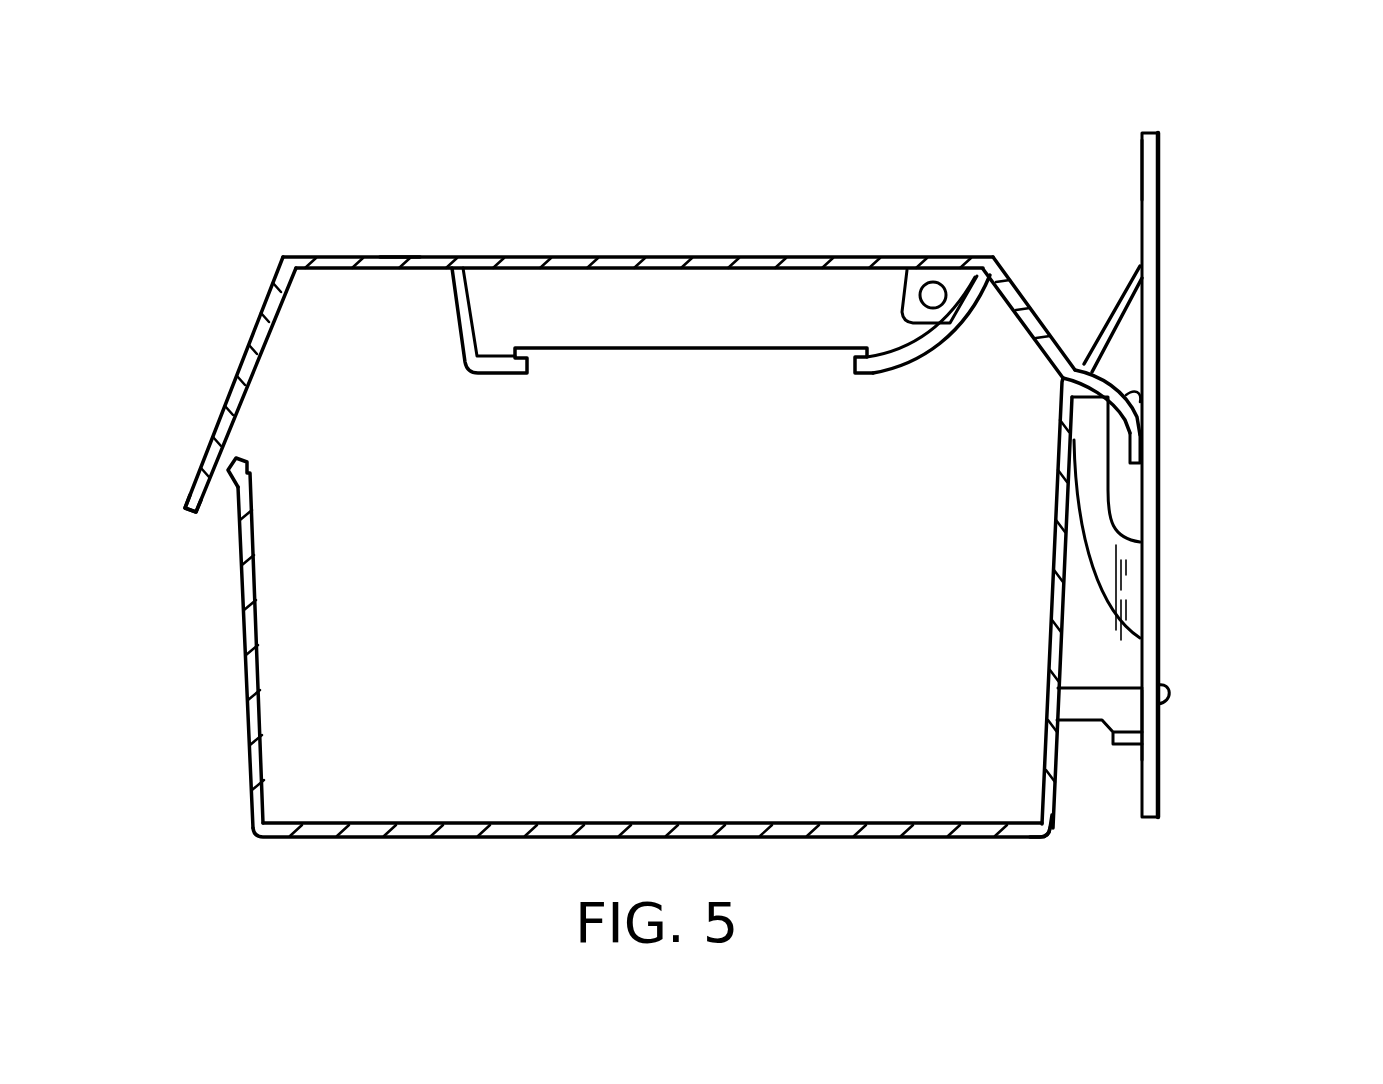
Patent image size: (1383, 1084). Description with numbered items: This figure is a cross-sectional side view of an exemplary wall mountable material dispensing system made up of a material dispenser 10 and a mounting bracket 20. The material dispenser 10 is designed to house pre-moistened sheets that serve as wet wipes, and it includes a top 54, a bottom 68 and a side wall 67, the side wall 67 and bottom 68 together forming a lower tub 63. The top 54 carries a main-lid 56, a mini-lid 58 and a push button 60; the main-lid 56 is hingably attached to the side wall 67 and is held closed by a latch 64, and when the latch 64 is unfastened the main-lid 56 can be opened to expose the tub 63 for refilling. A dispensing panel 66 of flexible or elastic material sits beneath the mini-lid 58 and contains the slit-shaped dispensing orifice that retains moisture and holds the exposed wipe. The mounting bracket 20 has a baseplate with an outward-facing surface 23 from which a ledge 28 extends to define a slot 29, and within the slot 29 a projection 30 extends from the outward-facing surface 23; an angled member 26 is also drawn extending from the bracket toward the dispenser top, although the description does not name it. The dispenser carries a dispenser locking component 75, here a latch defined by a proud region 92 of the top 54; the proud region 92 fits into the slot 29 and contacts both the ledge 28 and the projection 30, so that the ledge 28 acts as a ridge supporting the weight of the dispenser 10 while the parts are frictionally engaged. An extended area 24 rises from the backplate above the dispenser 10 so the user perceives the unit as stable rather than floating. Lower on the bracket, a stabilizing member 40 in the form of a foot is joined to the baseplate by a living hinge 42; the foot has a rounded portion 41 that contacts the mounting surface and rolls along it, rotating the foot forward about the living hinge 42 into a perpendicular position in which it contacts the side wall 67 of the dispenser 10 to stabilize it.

The material dispenser 10 is at (258, 212).
The mounting bracket 20 is at (1268, 255).
The outward-facing surface 23 is at (1142, 165).
The extended area 24 is at (1150, 153).
The mounting bracket 26 is at (1102, 318).
The ledge 28 is at (1075, 492).
The slot 29 is at (1130, 498).
The projection 30 is at (1140, 396).
The stabilizing member 40 is at (1088, 706).
The rounded portion 41 is at (1170, 697).
The living hinge 42 is at (1145, 742).
The top 54 is at (1000, 278).
The main-lid 56 is at (228, 395).
The mini-lid 58 is at (711, 262).
The push button 60 is at (402, 262).
The lower tub 63 is at (240, 668).
The latch 64 is at (187, 490).
The dispensing panel 66 is at (713, 358).
The side wall 67 is at (1052, 818).
The bottom 68 is at (920, 840).
The dispenser locking component 75 is at (1143, 432).
The proud region 92 is at (1128, 370).